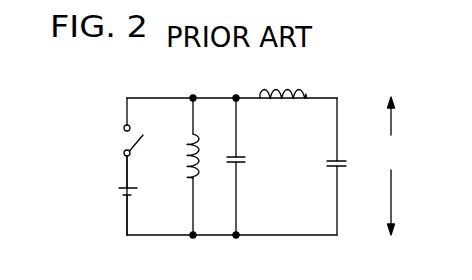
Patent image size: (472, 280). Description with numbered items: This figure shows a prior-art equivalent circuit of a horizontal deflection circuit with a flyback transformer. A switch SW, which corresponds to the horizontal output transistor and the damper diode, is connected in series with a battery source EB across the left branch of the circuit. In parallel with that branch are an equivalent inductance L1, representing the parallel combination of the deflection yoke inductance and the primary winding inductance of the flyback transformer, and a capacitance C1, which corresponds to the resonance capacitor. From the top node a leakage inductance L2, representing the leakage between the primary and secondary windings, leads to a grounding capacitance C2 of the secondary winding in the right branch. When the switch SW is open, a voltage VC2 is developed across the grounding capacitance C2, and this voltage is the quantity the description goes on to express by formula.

The switch SW is at (156, 138).
The battery voltage source EB is at (135, 195).
The equivalent inductance L1 is at (203, 163).
The resonance capacitor C1 is at (247, 159).
The leakage inductance L2 is at (273, 88).
The grounding capacitance C2 is at (347, 168).
The voltage across grounding capacitor VC2 is at (400, 166).